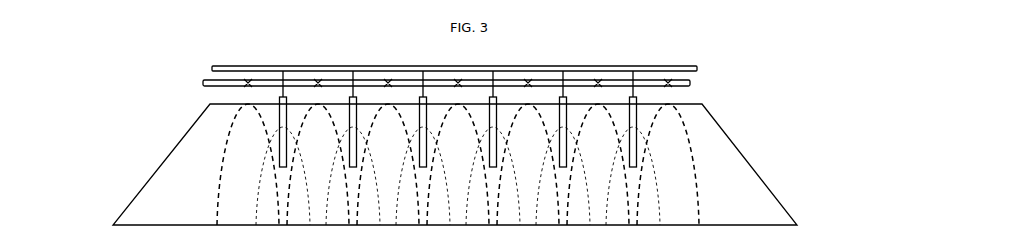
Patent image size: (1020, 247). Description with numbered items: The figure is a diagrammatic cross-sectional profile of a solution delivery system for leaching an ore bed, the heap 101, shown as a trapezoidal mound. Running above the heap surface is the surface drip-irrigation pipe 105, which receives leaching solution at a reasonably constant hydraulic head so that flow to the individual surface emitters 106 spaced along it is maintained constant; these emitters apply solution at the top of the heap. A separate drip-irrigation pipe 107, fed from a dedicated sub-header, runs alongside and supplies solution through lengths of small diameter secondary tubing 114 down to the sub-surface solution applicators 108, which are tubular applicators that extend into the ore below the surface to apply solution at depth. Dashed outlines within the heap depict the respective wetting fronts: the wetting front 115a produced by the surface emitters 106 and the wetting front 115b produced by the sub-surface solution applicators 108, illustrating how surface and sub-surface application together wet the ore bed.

The heap 101 is at (455, 164).
The surface drip-irrigation pipe 105 is at (195, 81).
The surface emitters 106 is at (239, 90).
The drip-irrigation pipe 107 is at (708, 62).
The sub-surface solution applicators 108 is at (645, 124).
The small diameter secondary tubing 114 is at (644, 92).
The wetting front 115a is at (225, 130).
The wetting front 115b is at (671, 173).